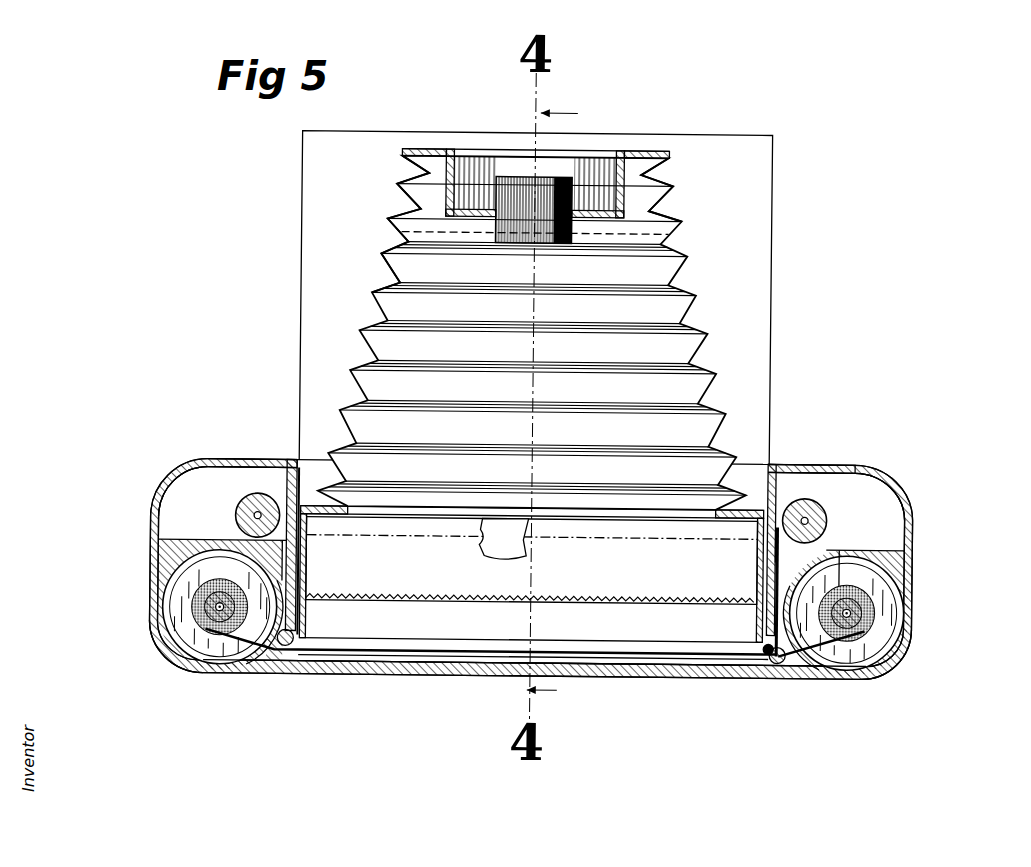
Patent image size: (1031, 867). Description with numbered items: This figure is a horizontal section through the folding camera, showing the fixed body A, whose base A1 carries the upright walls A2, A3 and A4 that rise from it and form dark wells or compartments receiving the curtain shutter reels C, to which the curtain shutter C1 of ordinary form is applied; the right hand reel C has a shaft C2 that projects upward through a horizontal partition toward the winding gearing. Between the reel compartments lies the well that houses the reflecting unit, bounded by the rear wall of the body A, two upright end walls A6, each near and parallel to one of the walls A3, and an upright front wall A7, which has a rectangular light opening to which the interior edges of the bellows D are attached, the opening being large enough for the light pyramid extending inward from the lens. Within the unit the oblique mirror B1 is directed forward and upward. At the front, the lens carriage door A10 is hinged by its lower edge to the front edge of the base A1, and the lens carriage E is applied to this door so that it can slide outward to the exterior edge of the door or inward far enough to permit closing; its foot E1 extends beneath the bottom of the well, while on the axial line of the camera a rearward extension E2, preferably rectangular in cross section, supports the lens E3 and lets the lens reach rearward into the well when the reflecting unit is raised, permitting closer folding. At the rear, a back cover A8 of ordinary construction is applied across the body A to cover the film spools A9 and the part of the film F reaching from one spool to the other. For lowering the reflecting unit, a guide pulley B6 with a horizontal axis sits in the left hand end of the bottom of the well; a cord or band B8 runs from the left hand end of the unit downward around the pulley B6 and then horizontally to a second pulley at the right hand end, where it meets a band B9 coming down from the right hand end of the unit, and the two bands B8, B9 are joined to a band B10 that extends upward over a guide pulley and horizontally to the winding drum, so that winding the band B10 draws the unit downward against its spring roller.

The fixed body A is at (913, 566).
The base A1 is at (836, 490).
The upright wall A2 is at (910, 508).
The upright wall A3 is at (775, 483).
The upright wall A4 is at (805, 655).
The upright end wall A6 is at (750, 617).
The upright front wall A7 is at (768, 478).
The back cover A8 is at (707, 662).
The film spool A9 is at (871, 613).
The lens carriage door A10 is at (350, 292).
The mirror B1 is at (627, 600).
The guide pulley B6 is at (316, 533).
The cord or band B8 is at (508, 531).
The cord or band B9 is at (827, 524).
The band B10 is at (793, 549).
The curtain shutter reel C is at (809, 497).
The curtain shutter C1 is at (364, 651).
The reel shaft C2 is at (827, 510).
The bellows D is at (663, 299).
The lens carriage E is at (604, 154).
The foot E1 is at (664, 204).
The rearward extension E2 is at (478, 150).
The lens E3 is at (571, 178).
The film F is at (410, 661).